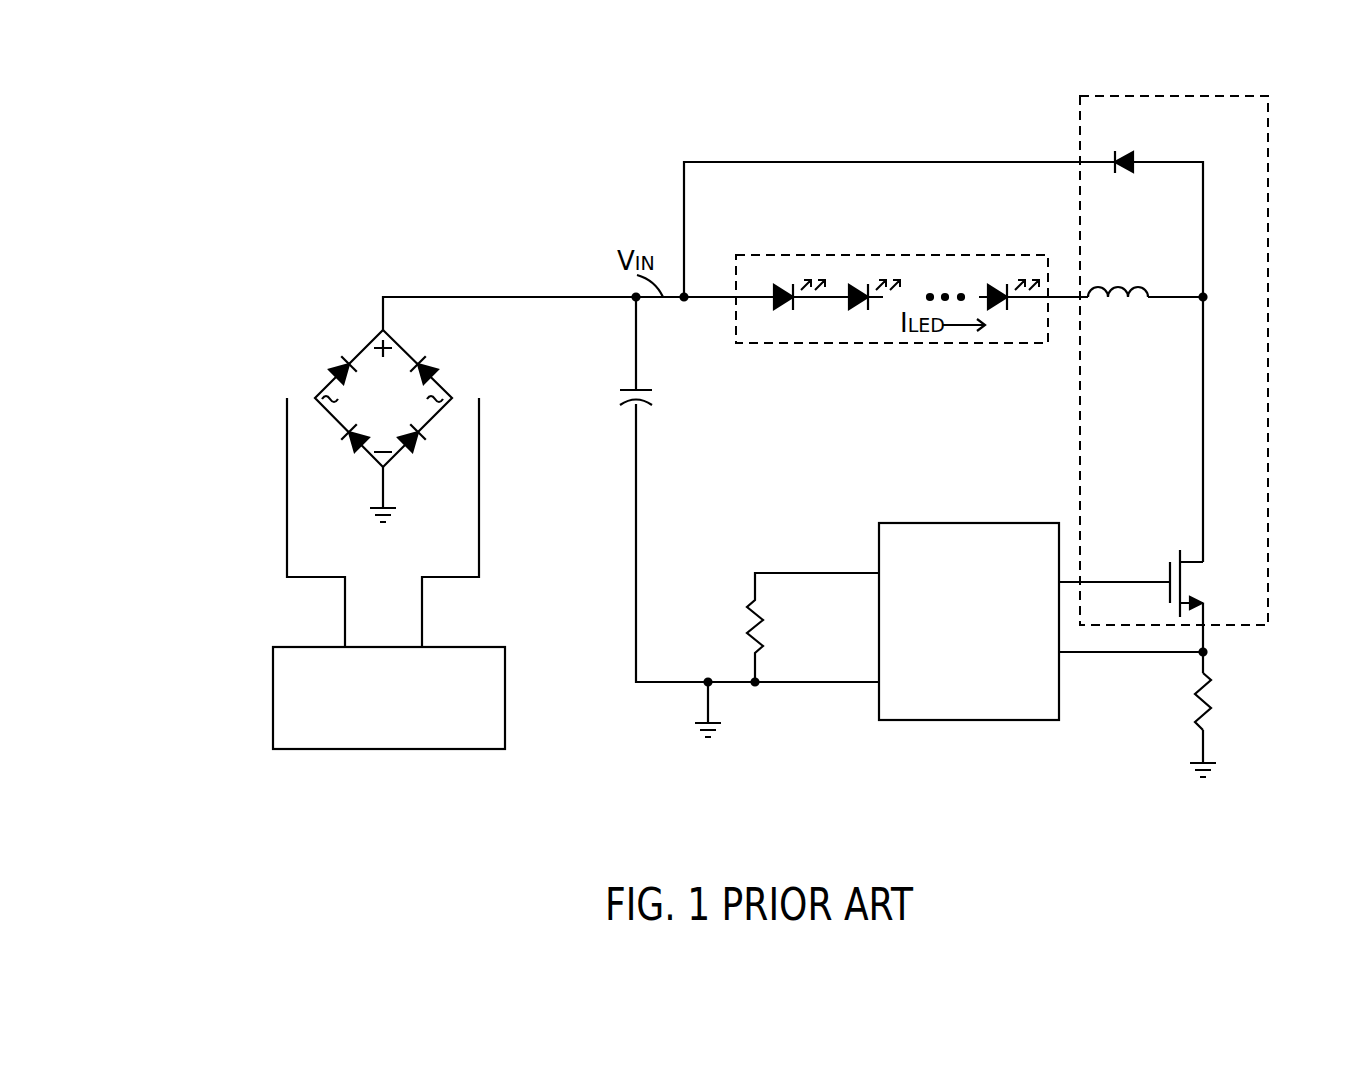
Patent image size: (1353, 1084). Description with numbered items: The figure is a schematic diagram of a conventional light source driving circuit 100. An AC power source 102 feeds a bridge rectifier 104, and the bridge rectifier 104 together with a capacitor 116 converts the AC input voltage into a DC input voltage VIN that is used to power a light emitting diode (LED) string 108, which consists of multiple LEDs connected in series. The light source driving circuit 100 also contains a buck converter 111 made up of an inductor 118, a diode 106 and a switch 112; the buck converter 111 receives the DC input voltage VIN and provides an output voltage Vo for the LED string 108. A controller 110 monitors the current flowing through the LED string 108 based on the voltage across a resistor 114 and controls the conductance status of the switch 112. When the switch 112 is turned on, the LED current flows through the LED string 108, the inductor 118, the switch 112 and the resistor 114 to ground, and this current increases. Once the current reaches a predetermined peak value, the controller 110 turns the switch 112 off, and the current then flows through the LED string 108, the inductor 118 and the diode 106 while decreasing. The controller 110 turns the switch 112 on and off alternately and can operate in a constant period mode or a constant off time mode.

The light source driving circuit 100 is at (222, 153).
The AC power source 102 is at (505, 688).
The bridge rectifier 104 is at (440, 381).
The diode 106 is at (1127, 152).
The LED string 108 is at (920, 255).
The controller 110 is at (983, 523).
The buck converter 111 is at (1080, 130).
The switch 112 is at (1170, 572).
The resistor 114 is at (1202, 717).
The capacitor 116 is at (640, 389).
The inductor 118 is at (1127, 288).